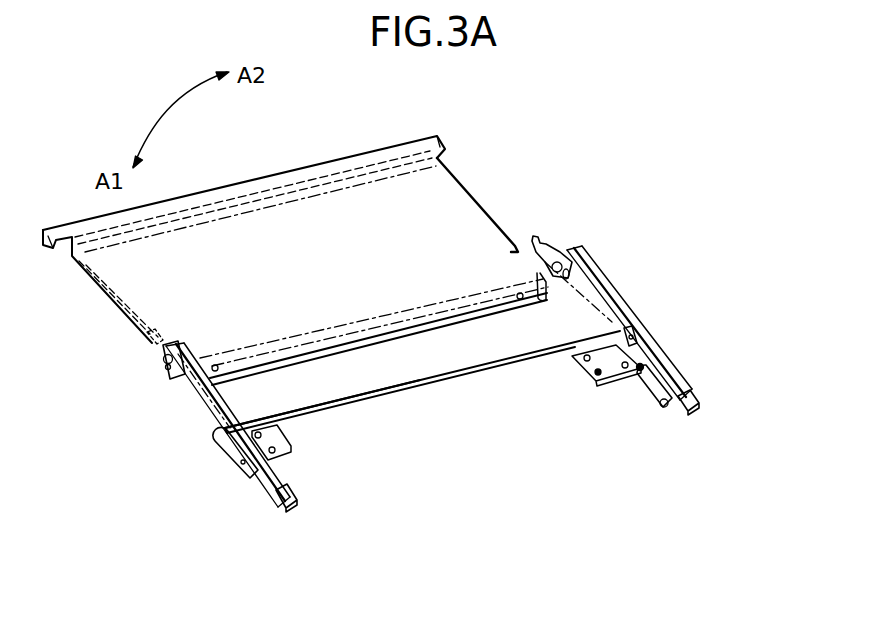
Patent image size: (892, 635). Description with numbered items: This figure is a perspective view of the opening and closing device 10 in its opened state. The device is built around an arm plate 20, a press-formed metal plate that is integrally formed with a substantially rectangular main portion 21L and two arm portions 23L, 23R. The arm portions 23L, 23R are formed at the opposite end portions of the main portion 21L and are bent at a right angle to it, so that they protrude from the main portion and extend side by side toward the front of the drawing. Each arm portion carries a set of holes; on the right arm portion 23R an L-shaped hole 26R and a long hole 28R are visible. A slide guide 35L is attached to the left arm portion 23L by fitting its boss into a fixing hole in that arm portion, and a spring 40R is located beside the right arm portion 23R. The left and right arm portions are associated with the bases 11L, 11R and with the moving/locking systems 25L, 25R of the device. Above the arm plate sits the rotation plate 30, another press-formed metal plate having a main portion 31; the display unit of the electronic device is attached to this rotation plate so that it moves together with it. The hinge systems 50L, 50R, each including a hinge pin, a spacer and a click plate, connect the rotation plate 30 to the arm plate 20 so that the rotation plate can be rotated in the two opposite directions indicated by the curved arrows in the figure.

The opening and closing device 10 is at (730, 83).
The base 11L is at (259, 497).
The base 11R is at (688, 375).
The arm plate 20 is at (447, 377).
The main portion 21L is at (377, 373).
The arm portion 23L is at (207, 400).
The arm portion 23R is at (608, 286).
The moving/locking system 25L is at (215, 484).
The moving/locking system 25R is at (684, 347).
The L-shaped hole 26R is at (630, 334).
The long hole 28R is at (643, 367).
The rotation plate 30 is at (253, 234).
The main portion 31 is at (363, 206).
The slide guide 35L is at (219, 437).
The spring 40R is at (655, 392).
The hinge system 50L is at (162, 370).
The hinge system 50R is at (575, 244).